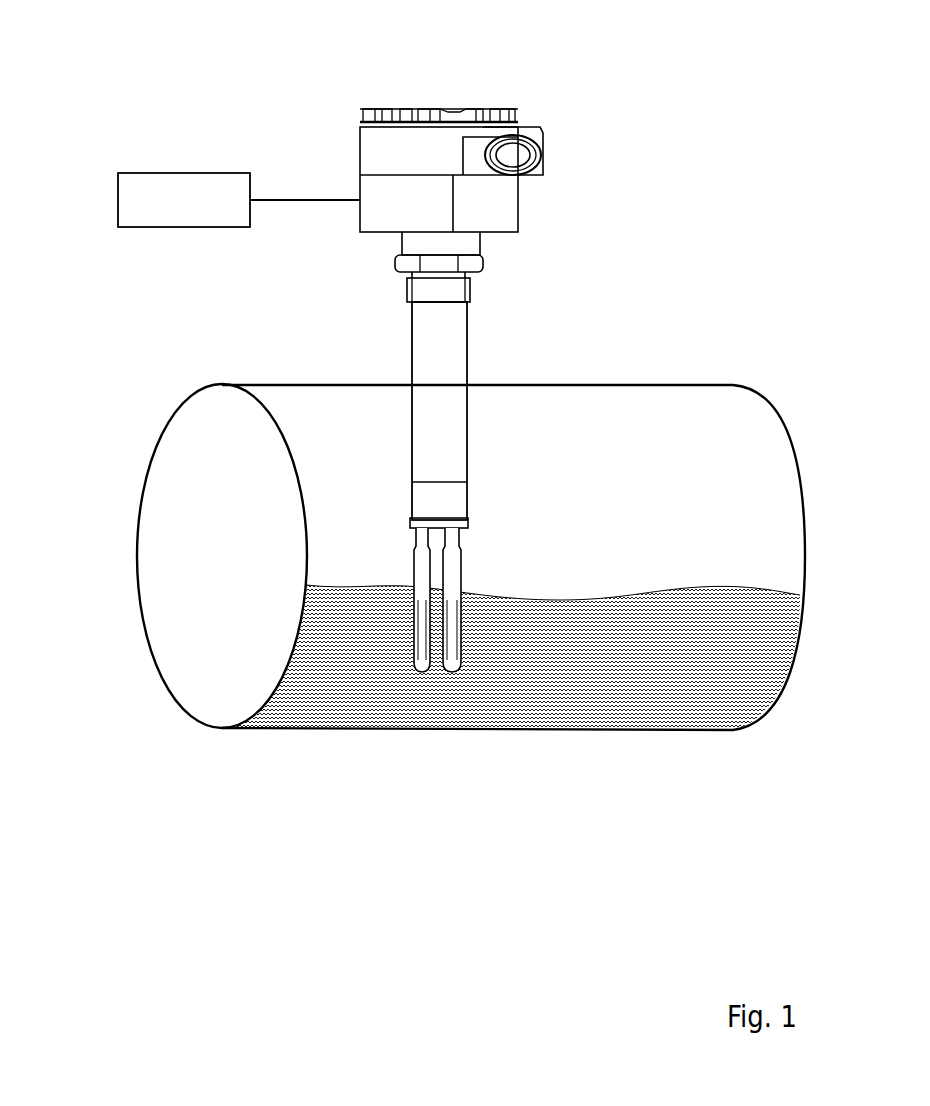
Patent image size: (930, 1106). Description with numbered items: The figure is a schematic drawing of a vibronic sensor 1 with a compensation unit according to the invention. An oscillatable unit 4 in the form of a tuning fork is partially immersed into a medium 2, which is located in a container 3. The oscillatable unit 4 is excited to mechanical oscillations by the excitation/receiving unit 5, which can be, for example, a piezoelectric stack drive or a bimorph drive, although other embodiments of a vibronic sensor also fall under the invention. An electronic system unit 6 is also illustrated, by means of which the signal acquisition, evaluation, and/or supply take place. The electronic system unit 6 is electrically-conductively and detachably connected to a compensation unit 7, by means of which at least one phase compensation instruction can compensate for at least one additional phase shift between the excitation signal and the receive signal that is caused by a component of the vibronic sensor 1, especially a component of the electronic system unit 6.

The vibronic sensor 1 is at (50, 0).
The medium 2 is at (577, 662).
The container 3 is at (762, 710).
The oscillatable unit 4 is at (442, 610).
The excitation/receiving unit 5 is at (410, 500).
The electronic system unit 6 is at (498, 205).
The compensation unit 7 is at (239, 200).